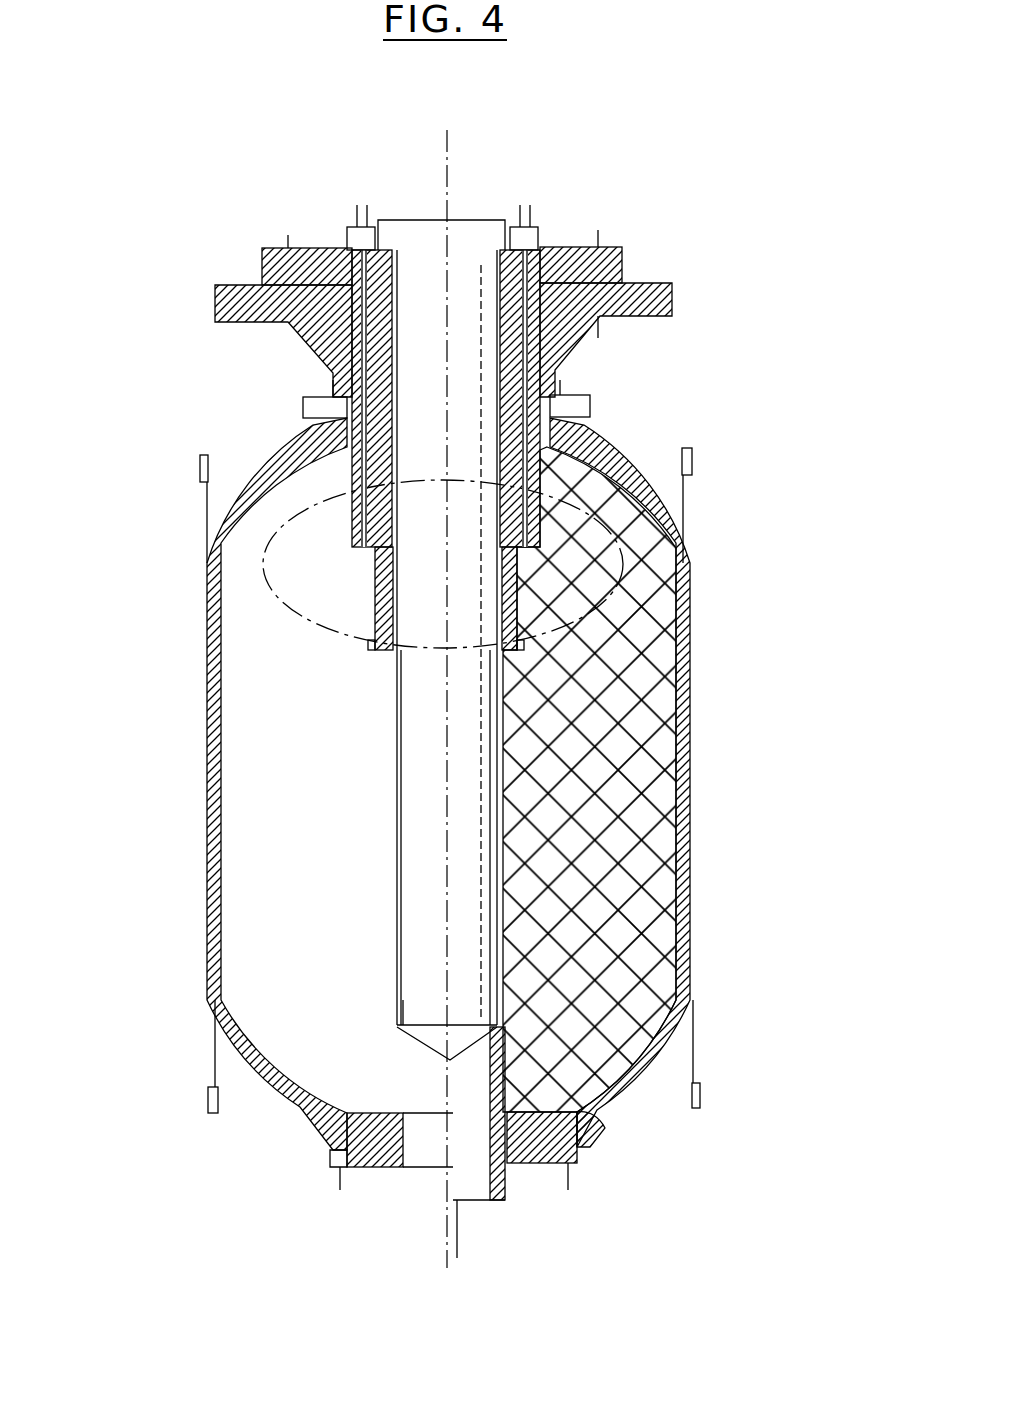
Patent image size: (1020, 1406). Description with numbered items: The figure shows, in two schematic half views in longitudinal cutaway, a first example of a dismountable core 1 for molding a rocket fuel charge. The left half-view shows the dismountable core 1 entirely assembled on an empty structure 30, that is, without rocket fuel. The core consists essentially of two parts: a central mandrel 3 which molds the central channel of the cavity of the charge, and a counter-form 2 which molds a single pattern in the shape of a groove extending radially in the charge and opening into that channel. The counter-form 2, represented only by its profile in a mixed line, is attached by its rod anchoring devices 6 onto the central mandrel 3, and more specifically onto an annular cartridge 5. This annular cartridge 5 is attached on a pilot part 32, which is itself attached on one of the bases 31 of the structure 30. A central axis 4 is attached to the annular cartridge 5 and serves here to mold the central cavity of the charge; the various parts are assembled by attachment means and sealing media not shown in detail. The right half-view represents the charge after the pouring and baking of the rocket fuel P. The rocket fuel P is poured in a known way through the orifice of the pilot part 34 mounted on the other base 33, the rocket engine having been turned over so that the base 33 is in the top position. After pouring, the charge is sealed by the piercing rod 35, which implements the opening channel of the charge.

The dismountable core 1 is at (494, 561).
The counter-form 2 is at (318, 537).
The central mandrel 3 is at (341, 365).
The central axis 4 is at (420, 242).
The annular cartridge 5 is at (316, 248).
The rod anchoring device 6 is at (577, 247).
The structure 30 is at (207, 608).
The base 31 is at (590, 433).
The pilot part 32 is at (667, 298).
The base 33 is at (597, 1130).
The pilot part 34 is at (550, 1168).
The piercing rod 35 is at (500, 1212).
The rocket fuel P is at (622, 703).